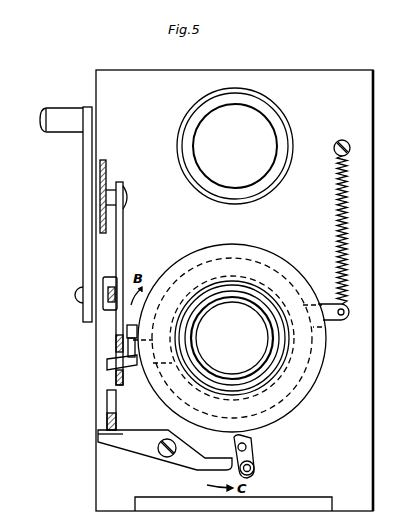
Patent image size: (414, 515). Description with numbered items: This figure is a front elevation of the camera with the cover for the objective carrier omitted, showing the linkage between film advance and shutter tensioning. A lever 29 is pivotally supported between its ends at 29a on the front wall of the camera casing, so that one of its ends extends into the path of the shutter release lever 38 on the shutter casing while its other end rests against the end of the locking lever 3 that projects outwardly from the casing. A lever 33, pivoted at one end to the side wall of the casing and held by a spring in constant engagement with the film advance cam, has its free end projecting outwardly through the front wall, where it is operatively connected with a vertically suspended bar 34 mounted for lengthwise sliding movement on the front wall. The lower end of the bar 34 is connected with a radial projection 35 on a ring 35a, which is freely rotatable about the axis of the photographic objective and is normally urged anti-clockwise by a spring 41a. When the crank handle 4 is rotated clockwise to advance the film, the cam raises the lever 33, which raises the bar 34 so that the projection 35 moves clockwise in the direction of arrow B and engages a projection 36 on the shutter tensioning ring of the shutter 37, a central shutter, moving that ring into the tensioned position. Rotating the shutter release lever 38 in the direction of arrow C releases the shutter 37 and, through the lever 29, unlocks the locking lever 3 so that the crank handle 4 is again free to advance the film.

The locking lever 3 is at (107, 400).
The crank handle 4 is at (83, 208).
The lever 29 is at (143, 448).
The pivot 29a is at (166, 458).
The lever 33 is at (107, 300).
The bar 34 is at (123, 227).
The radial projection 35 is at (112, 364).
The ring 35a is at (235, 270).
The projection on shutter tensioning ring 36 is at (127, 331).
The photographic shutter 37 is at (272, 262).
The shutter release lever 38 is at (256, 469).
The spring 41a is at (346, 216).